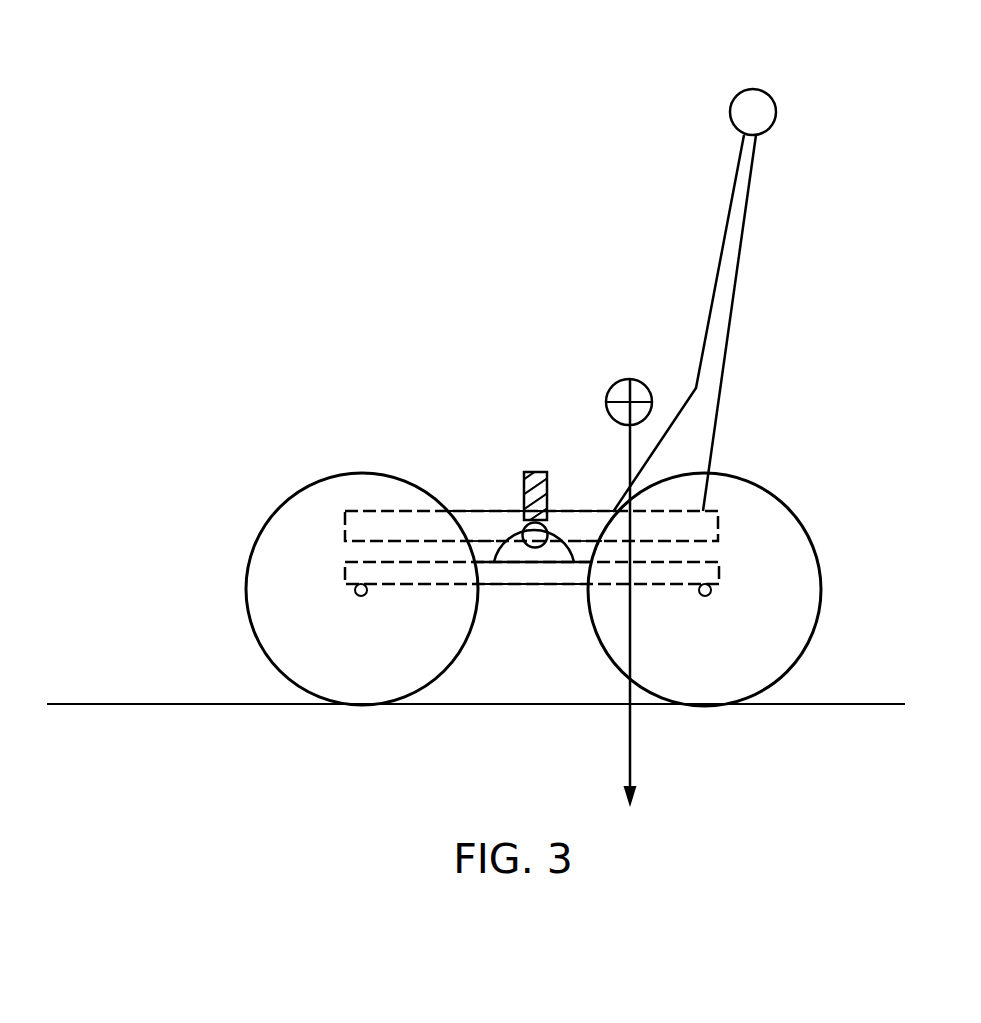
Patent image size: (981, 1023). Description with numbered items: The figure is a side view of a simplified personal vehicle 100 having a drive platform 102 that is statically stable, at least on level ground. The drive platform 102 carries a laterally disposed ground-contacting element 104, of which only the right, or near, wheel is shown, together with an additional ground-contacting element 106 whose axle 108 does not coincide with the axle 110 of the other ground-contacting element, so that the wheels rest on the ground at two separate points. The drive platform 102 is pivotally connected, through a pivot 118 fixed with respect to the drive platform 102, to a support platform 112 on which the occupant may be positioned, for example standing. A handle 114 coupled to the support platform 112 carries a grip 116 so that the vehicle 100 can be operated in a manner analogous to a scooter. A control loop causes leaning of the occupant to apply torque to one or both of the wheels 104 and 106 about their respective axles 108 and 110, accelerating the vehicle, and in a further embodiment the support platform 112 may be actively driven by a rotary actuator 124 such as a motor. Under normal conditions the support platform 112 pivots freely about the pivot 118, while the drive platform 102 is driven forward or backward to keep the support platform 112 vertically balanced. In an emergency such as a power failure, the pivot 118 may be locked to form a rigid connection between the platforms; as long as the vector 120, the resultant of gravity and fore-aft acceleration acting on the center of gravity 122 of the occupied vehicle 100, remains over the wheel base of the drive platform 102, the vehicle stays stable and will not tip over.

The personal vehicle 100 is at (271, 99).
The drive platform 102 is at (532, 593).
The ground-contacting element 104 is at (821, 595).
The additional ground-contacting element 106 is at (245, 596).
The axle 108 is at (361, 597).
The axle 110 is at (705, 597).
The support platform 112 is at (590, 508).
The handle 114 is at (736, 273).
The grip 116 is at (776, 115).
The pivot 118 is at (522, 531).
The vector 120 is at (632, 738).
The center of gravity 122 is at (630, 377).
The rotary actuator 124 is at (533, 470).